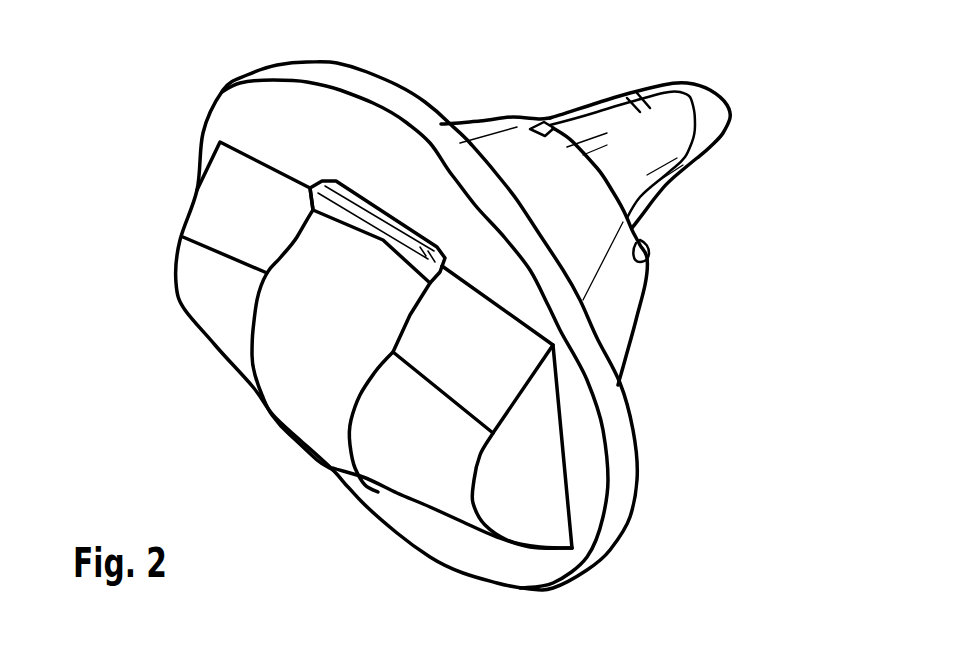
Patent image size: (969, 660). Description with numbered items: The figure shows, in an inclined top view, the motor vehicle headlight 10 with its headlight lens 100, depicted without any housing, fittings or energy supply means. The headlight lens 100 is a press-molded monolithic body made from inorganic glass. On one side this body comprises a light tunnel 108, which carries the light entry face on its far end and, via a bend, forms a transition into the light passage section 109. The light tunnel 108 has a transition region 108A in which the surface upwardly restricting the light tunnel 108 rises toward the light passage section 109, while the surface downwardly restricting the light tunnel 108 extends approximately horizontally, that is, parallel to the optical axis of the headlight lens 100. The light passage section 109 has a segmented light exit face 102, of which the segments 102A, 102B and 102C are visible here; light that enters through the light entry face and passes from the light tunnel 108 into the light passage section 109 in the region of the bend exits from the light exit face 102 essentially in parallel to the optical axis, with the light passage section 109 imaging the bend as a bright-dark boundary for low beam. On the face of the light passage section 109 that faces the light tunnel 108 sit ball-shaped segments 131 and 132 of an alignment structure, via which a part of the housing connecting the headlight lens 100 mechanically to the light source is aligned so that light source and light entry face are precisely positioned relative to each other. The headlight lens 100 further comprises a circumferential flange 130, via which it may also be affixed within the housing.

The motor vehicle headlight 10 is at (706, 270).
The headlight lens 100 is at (742, 400).
The light exit face 102 is at (280, 372).
The segment of the light exit face 102A is at (307, 398).
The segment of the light exit face 102B is at (207, 310).
The segment of the light exit face 102C is at (385, 443).
The light tunnel 108 is at (670, 83).
The transition region 108A is at (587, 115).
The light passage section 109 is at (468, 122).
The circumferential flange 130 is at (280, 77).
The ball-shaped segment 131 is at (545, 121).
The ball-shaped segment 132 is at (650, 257).